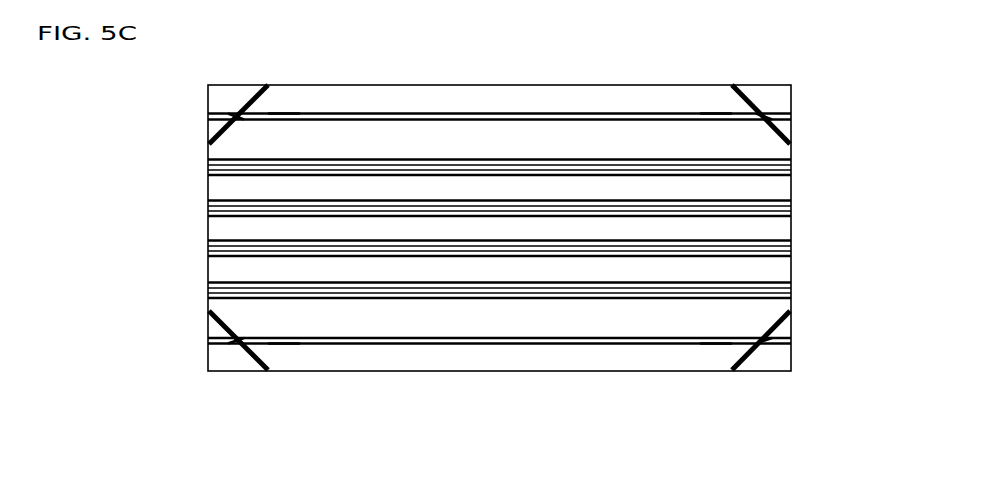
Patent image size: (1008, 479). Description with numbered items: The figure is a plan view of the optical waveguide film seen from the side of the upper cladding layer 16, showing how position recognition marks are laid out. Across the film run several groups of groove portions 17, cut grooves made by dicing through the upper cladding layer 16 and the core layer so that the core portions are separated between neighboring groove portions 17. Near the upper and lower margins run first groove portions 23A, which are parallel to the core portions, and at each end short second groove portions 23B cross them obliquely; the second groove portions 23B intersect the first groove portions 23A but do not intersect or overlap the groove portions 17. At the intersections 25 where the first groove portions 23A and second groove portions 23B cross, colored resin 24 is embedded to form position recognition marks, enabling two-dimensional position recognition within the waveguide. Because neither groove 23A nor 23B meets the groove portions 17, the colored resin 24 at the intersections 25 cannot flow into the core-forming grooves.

The upper cladding layer 16 is at (577, 92).
The groove portions 17 is at (793, 160).
The first groove portions 23A is at (204, 117).
The second groove portions 23B is at (269, 80).
The colored resin 24 is at (279, 113).
The intersections 25 is at (231, 105).